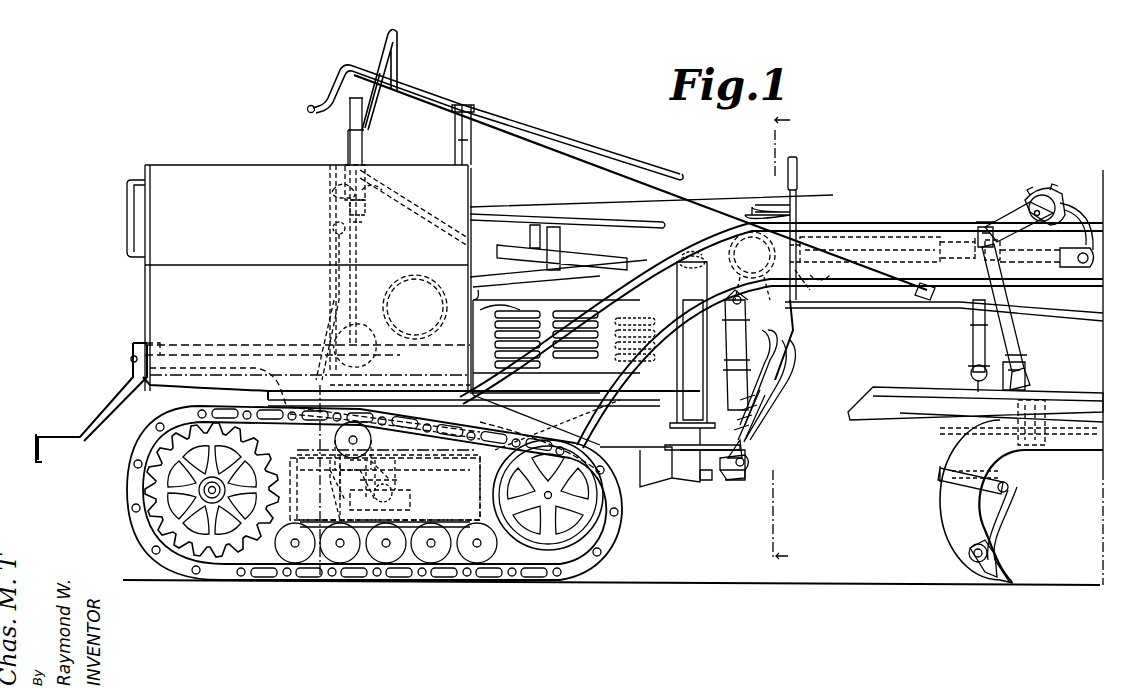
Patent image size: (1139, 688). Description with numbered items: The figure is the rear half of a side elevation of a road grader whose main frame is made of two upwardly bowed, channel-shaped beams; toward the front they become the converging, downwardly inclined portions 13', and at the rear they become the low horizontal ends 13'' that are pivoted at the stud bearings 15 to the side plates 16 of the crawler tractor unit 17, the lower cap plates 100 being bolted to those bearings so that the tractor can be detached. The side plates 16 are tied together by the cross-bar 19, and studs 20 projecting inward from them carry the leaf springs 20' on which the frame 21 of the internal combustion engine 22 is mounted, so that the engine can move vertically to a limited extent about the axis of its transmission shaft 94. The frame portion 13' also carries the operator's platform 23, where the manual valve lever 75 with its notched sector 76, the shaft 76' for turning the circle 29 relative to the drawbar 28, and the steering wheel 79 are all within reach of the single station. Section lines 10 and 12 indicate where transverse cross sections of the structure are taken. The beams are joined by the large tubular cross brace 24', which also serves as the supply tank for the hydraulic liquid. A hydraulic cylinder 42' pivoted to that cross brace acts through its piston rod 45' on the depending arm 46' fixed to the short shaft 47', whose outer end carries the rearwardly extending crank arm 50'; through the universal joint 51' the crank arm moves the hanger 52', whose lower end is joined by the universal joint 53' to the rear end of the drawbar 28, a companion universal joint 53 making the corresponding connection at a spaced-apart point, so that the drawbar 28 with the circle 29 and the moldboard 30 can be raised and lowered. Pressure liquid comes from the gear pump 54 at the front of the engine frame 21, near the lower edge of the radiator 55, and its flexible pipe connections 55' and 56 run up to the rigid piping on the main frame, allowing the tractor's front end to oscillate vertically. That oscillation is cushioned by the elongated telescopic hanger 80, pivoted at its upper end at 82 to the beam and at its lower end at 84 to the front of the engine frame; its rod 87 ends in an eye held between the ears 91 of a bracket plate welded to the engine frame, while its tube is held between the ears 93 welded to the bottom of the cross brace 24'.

The section line 10 is at (771, 345).
The frame 12 is at (318, 386).
The converging forward portion of frame beam 13' is at (781, 377).
The horizontal rear end of frame beam 13'' is at (464, 413).
The stud bearing 15 is at (400, 582).
The side plate 16 is at (462, 582).
The crawler 17 is at (607, 553).
The cross-bar 19 is at (378, 582).
The stud 20 is at (548, 544).
The leaf spring 20' is at (458, 460).
The engine frame 21 is at (706, 482).
The internal combustion engine 22 is at (606, 238).
The operator's platform 23 is at (185, 330).
The tubular cross brace 24' is at (726, 259).
The drawbar 28 is at (1078, 388).
The circle 29 is at (1092, 455).
The moldboard 30 is at (1005, 530).
The hydraulic cylinder 42' is at (895, 237).
The piston rod 45' is at (1047, 206).
The depending arm 46' is at (1094, 213).
The short shaft 47' is at (1039, 184).
The crank arm 50' is at (1018, 211).
The universal joint 51' is at (972, 215).
The hanger 52' is at (1015, 317).
The universal joint 53 is at (959, 346).
The universal joint 53' is at (1032, 374).
The gear pump 54 is at (728, 482).
The radiator 55 is at (702, 351).
The flexible pipe connection 55' is at (786, 377).
The flexible pipe connection 56 is at (790, 380).
The manually operable lever 75 is at (361, 146).
The notched sector 76 is at (378, 275).
The shaft 76' is at (642, 182).
The steering wheel 79 is at (384, 45).
The telescopic hanger 80 is at (765, 395).
The pivot 82 is at (740, 305).
The pivot 84 is at (746, 462).
The rod 87 is at (736, 436).
The ear 91 is at (743, 468).
The ear 93 is at (792, 318).
The engine transmission shaft 94 is at (268, 580).
The lower cap plate 100 is at (360, 583).